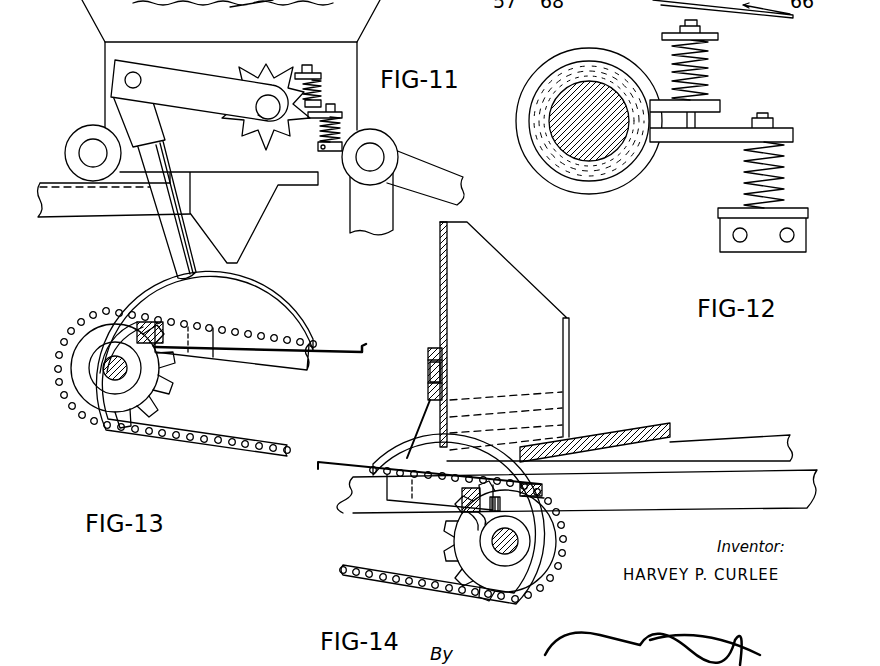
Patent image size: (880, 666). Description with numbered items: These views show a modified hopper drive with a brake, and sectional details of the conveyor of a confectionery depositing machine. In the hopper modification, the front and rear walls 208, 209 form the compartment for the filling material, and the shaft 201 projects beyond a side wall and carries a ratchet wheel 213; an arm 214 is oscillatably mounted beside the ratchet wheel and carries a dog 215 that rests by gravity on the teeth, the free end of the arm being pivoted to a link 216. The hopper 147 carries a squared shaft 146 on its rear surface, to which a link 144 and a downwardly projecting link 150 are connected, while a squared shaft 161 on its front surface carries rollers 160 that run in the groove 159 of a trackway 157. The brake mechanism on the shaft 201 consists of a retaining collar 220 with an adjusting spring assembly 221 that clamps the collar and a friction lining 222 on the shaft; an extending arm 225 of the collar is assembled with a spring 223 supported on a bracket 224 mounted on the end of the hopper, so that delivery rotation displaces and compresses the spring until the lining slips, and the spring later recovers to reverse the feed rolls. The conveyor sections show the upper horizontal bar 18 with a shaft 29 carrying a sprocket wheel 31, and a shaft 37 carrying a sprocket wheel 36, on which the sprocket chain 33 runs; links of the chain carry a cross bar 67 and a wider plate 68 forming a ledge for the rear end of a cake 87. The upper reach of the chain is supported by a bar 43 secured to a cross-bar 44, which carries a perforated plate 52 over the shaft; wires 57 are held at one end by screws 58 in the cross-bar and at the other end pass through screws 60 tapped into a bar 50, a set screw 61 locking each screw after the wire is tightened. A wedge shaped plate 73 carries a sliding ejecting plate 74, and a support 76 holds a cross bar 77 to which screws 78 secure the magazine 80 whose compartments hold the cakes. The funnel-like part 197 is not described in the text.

In FIG. 14, the upper horizontal bar 18 is at (337, 492).
In FIG. 13, the shaft 29 is at (122, 380).
In FIG. 13, the sprocket wheel 31 is at (172, 398).
In FIG. 13, the sprocket chain 33 is at (225, 437).
In FIG. 14, the sprocket chain 33 is at (372, 465).
In FIG. 14, the sprocket wheel 36 is at (443, 537).
In FIG. 14, the shaft 37 is at (518, 545).
In FIG. 13, the bar 43 is at (300, 364).
In FIG. 13, the cross-bar 44 is at (165, 343).
In FIG. 14, the bar 50 is at (462, 495).
In FIG. 13, the plate 52 is at (135, 322).
In FIG. 13, the wire 57 is at (364, 350).
In FIG. 14, the wire 57 is at (322, 468).
In FIG. 13, the screw 58 is at (141, 355).
In FIG. 14, the screw 60 is at (502, 505).
In FIG. 14, the set screw 61 is at (473, 523).
In FIG. 14, the cross bar 67 is at (542, 485).
In FIG. 14, the plate 68 is at (545, 493).
In FIG. 14, the wedge shaped plate 73 is at (735, 436).
In FIG. 14, the ejecting plate 74 is at (670, 425).
In FIG. 14, the support 76 is at (412, 432).
In FIG. 14, the cross bar 77 is at (428, 356).
In FIG. 14, the screw 78 is at (445, 362).
In FIG. 14, the magazine 80 is at (438, 298).
In FIG. 14, the cake 87 is at (503, 400).
In FIG. 11, the link 144 is at (462, 190).
In FIG. 11, the squared shaft 146 is at (366, 165).
In FIG. 11, the hopper 147 is at (102, 88).
In FIG. 11, the link 150 is at (370, 232).
In FIG. 11, the trackway 157 is at (75, 220).
In FIG. 11, the groove 159 is at (68, 186).
In FIG. 11, the roller 160 is at (77, 137).
In FIG. 11, the squared shaft 161 is at (93, 150).
In FIG. 11, the funnel 197 is at (262, 220).
In FIG. 11, the shaft 201 is at (265, 120).
In FIG. 12, the shaft 201 is at (593, 157).
In FIG. 11, the front wall 208 is at (92, 22).
In FIG. 11, the rear wall 209 is at (377, 33).
In FIG. 11, the ratchet wheel 213 is at (270, 63).
In FIG. 11, the arm 214 is at (168, 63).
In FIG. 11, the dog 215 is at (213, 66).
In FIG. 11, the link 216 is at (163, 230).
In FIG. 11, the retaining collar 220 is at (313, 98).
In FIG. 12, the retaining collar 220 is at (577, 50).
In FIG. 11, the adjusting spring assembly 221 is at (314, 78).
In FIG. 12, the adjusting spring assembly 221 is at (707, 80).
In FIG. 12, the friction lining 222 is at (592, 63).
In FIG. 11, the spring 223 is at (345, 128).
In FIG. 12, the spring 223 is at (745, 152).
In FIG. 11, the bracket 224 is at (318, 148).
In FIG. 12, the bracket 224 is at (718, 215).
In FIG. 11, the extending arm 225 is at (342, 114).
In FIG. 12, the extending arm 225 is at (730, 128).